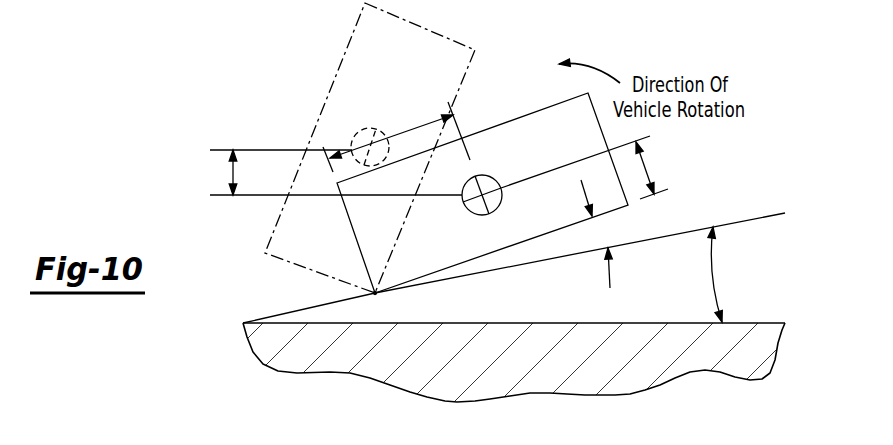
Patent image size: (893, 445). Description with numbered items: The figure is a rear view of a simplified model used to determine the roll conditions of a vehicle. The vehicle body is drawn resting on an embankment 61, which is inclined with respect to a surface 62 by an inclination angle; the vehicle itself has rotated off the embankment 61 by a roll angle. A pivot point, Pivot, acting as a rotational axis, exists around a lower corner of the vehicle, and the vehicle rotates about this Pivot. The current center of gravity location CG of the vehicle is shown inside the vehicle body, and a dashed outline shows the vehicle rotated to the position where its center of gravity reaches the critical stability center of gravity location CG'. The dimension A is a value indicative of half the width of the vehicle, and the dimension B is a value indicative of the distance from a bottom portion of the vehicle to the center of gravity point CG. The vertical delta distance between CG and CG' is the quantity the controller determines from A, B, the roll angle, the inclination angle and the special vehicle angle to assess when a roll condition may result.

The embankment 61 is at (785, 213).
The surface 62 is at (785, 322).
The center of gravity point CG is at (467, 192).
The critical stability center of gravity location CG' is at (359, 136).
The half vehicle width value A is at (396, 137).
The center of gravity height value B is at (652, 170).
The pivot point Pivot is at (372, 293).